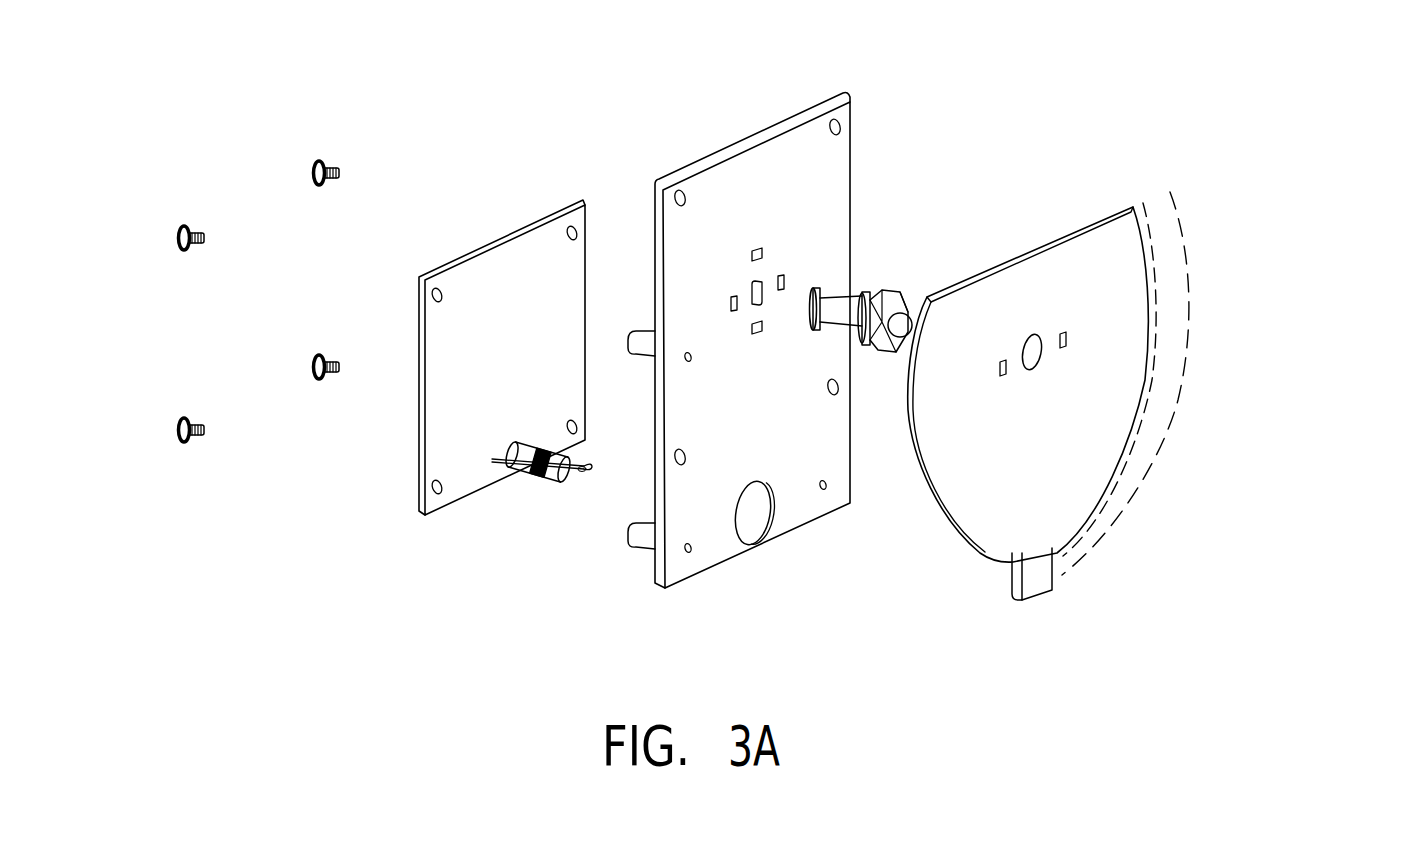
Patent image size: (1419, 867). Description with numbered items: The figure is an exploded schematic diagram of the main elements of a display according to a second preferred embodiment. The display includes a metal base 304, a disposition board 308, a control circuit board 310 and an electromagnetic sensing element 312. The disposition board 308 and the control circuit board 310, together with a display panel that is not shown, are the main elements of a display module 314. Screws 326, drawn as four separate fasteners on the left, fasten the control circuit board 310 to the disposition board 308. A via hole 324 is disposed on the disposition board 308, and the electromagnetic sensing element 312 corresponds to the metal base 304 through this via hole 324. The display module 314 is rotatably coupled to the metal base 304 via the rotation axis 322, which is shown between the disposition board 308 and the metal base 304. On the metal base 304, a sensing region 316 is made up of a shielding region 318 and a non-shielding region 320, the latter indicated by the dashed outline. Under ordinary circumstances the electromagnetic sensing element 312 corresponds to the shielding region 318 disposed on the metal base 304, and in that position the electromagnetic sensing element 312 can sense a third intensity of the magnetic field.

The metal base 304 is at (1110, 210).
The disposition board 308 is at (760, 133).
The control circuit board 310 is at (505, 237).
The electromagnetic sensing element 312 is at (575, 472).
The display module 314 is at (687, 85).
The sensing region 316 is at (1314, 370).
The shielding region 318 is at (1037, 580).
The non-shielding region 320 is at (1180, 372).
The rotation axis 322 is at (850, 303).
The via hole 324 is at (788, 518).
The screw 326 is at (333, 162).